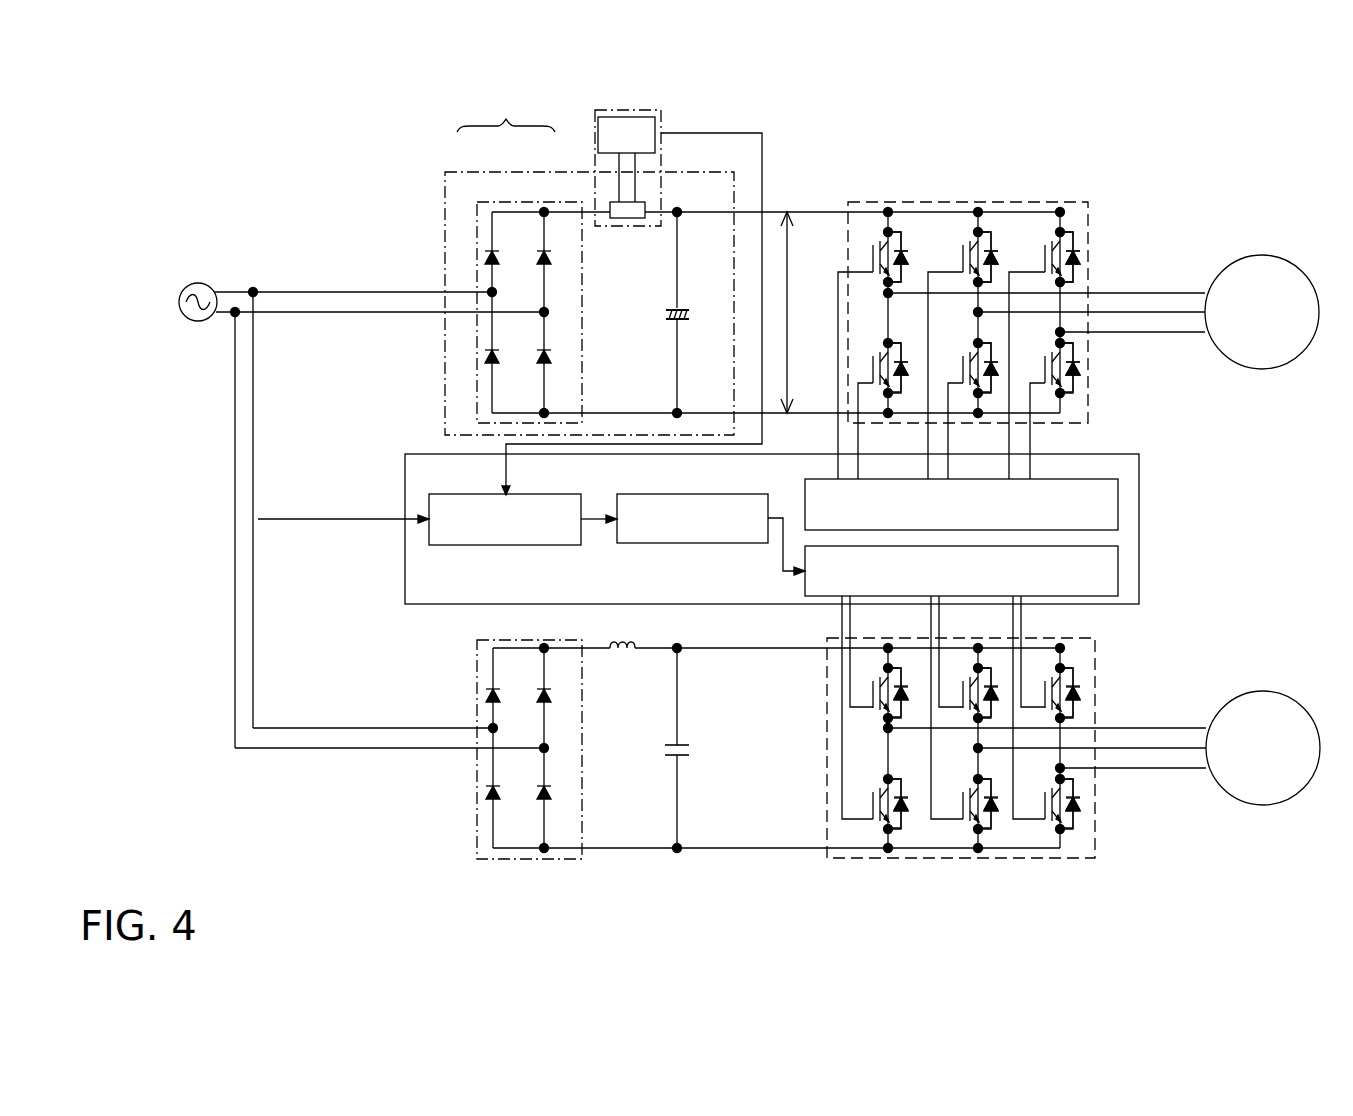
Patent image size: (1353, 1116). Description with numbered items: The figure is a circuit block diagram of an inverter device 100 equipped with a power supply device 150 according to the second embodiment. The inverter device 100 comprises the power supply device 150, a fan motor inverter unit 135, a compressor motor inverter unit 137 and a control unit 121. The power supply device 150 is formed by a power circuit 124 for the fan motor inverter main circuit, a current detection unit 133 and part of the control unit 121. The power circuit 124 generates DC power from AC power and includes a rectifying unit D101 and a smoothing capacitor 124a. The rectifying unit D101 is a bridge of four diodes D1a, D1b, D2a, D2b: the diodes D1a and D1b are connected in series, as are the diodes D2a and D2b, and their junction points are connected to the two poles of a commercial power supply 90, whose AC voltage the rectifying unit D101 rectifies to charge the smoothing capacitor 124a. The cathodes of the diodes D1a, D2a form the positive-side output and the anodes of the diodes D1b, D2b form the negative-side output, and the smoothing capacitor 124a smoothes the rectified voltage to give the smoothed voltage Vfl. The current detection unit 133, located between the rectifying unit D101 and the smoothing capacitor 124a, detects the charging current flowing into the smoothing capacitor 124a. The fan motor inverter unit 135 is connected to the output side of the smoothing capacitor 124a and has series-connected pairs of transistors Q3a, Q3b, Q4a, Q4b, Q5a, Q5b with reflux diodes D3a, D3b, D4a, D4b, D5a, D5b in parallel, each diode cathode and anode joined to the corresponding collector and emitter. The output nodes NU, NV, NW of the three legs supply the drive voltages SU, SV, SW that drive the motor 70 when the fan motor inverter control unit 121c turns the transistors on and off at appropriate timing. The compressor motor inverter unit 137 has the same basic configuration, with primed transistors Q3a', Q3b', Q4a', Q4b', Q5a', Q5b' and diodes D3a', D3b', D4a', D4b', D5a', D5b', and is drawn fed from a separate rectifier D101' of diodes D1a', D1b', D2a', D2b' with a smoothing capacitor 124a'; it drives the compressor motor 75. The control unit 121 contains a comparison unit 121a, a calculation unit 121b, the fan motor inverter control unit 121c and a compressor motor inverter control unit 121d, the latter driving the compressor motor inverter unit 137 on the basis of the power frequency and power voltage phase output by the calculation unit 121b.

The inverter device 100 is at (1128, 178).
The commercial power supply 90 is at (192, 286).
The power supply device 150 is at (609, 295).
The power circuit for fan motor inverter main circuit 124 is at (500, 168).
The current detection unit 133 is at (585, 128).
The rectifying unit D101 is at (486, 312).
The diode D1a is at (508, 247).
The diode D2a is at (559, 245).
The diode D1b is at (508, 346).
The diode D2b is at (559, 344).
The smoothing capacitor 124a is at (698, 313).
The fan motor inverter unit 135 is at (1010, 196).
The transistor Q3a is at (873, 351).
The transistor Q4a is at (963, 351).
The transistor Q5a is at (1044, 351).
The transistor Q3b is at (880, 399).
The transistor Q4b is at (969, 402).
The transistor Q5b is at (1051, 405).
The reflux diode D3a is at (912, 255).
The reflux diode D4a is at (1002, 255).
The reflux diode D5a is at (1076, 248).
The reflux diode D3b is at (912, 356).
The reflux diode D4b is at (997, 358).
The reflux diode D5b is at (1076, 383).
The U-phase node NU is at (900, 300).
The V-phase node NV is at (990, 320).
The W-phase node NW is at (1072, 325).
The drive voltage SU is at (1046, 282).
The drive voltage SV is at (1091, 301).
The drive voltage SW is at (1132, 321).
The smoothed voltage Vfl is at (796, 312).
The motor 70 is at (1256, 266).
The control unit 121 is at (412, 466).
The comparison unit 121a is at (533, 499).
The calculation unit 121b is at (716, 499).
The fan motor inverter control unit 121c is at (1058, 484).
The compressor motor inverter control unit 121d is at (804, 592).
The rectifier diode bridge D101' is at (512, 733).
The diode D1a' is at (511, 684).
The diode D2a' is at (561, 682).
The diode D1b' is at (511, 781).
The diode D2b' is at (561, 779).
The smoothing capacitor 124a' is at (700, 748).
The compressor motor inverter unit 137 is at (1104, 636).
The transistor Q3a' is at (880, 693).
The transistor Q4a' is at (969, 688).
The transistor Q5a' is at (1051, 688).
The transistor Q3b' is at (881, 795).
The transistor Q4b' is at (969, 798).
The transistor Q5b' is at (1050, 800).
The reflux diode D3a' is at (908, 682).
The reflux diode D4a' is at (998, 681).
The reflux diode D5a' is at (1079, 681).
The reflux diode D3b' is at (911, 794).
The reflux diode D4b' is at (999, 794).
The reflux diode D5b' is at (1080, 814).
The compressor motor 75 is at (1257, 700).